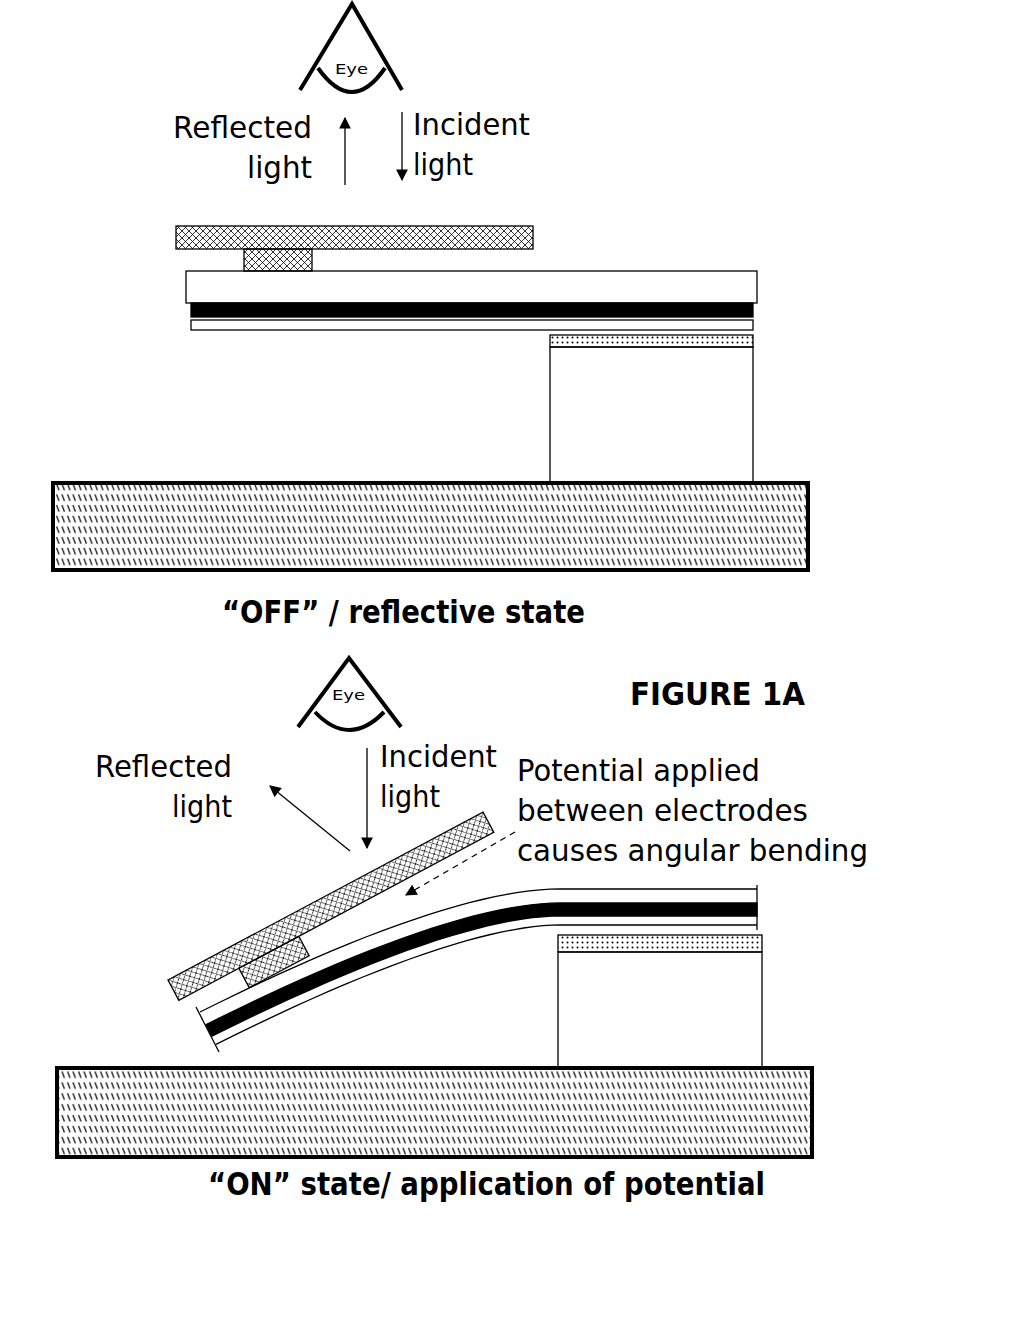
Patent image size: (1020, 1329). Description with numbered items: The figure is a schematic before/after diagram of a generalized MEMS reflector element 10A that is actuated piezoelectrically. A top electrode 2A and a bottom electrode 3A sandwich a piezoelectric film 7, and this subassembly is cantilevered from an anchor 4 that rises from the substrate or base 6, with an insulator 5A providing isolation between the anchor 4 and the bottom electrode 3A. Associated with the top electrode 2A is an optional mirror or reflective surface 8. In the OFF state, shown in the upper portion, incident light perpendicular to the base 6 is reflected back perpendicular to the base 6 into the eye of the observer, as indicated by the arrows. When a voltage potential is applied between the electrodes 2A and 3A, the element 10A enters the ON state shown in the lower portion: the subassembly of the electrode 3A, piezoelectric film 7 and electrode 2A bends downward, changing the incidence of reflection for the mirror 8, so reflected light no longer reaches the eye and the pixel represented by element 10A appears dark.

The reflector element 10A is at (143, 160).
The mirror or reflector surface 8 is at (533, 236).
The top electrode 2A is at (778, 888).
The piezoelectric film 7 is at (190, 315).
The bottom electrode 3A is at (482, 330).
The insulator 5A is at (740, 340).
The anchor 4 is at (656, 707).
The substrate 6 is at (432, 820).